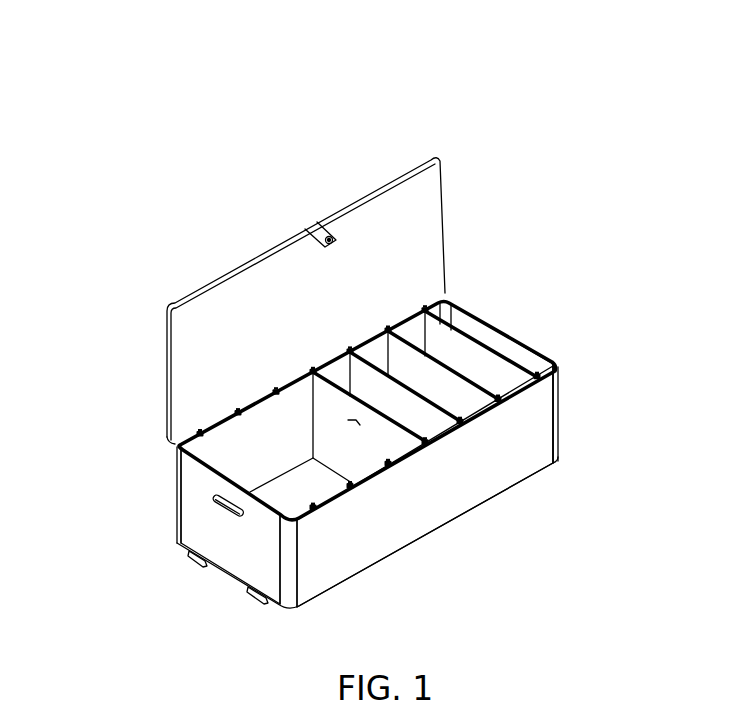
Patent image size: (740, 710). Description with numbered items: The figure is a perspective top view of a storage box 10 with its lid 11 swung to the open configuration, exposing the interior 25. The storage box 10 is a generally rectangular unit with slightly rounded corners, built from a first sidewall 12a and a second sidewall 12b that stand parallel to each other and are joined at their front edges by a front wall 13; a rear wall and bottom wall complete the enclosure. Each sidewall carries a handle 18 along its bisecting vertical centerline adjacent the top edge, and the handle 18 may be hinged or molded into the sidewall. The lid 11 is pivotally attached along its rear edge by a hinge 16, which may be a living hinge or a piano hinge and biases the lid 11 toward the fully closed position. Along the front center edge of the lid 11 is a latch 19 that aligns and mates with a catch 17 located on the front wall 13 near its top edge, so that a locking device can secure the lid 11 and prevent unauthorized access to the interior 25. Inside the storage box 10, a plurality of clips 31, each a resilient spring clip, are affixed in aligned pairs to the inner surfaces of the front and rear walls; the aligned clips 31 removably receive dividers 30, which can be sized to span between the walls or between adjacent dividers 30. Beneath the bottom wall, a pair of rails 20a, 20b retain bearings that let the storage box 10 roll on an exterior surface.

The storage box 10 is at (129, 163).
The lid 11 is at (253, 252).
The first sidewall 12a is at (188, 495).
The second sidewall 12b is at (560, 393).
The front wall 13 is at (497, 468).
The hinge 16 is at (173, 440).
The catch 17 is at (430, 458).
The handle 18 is at (217, 508).
The latch 19 is at (330, 236).
The first rail 20a is at (198, 565).
The second rail 20b is at (262, 598).
The interior 25 is at (355, 417).
The divider 30 is at (508, 377).
The clip 31 is at (195, 437).